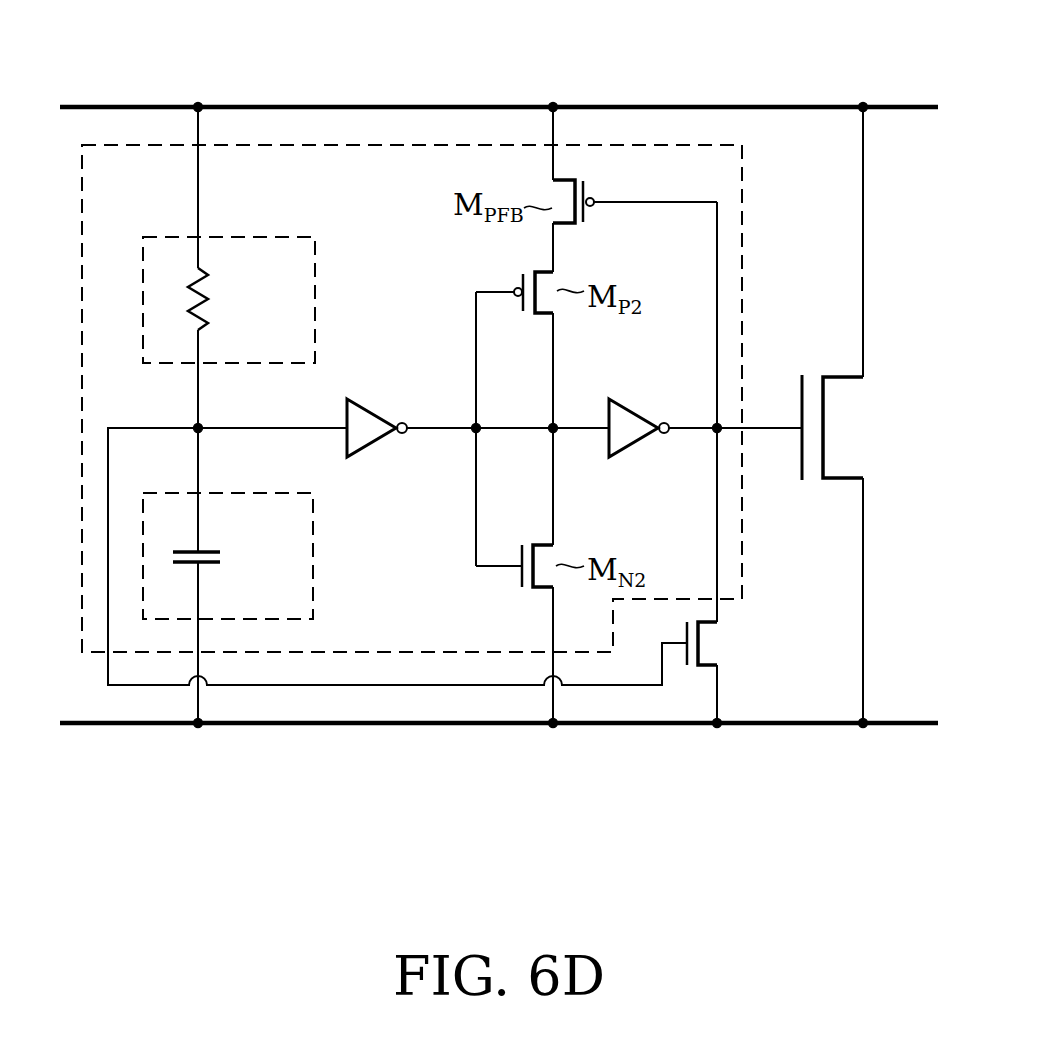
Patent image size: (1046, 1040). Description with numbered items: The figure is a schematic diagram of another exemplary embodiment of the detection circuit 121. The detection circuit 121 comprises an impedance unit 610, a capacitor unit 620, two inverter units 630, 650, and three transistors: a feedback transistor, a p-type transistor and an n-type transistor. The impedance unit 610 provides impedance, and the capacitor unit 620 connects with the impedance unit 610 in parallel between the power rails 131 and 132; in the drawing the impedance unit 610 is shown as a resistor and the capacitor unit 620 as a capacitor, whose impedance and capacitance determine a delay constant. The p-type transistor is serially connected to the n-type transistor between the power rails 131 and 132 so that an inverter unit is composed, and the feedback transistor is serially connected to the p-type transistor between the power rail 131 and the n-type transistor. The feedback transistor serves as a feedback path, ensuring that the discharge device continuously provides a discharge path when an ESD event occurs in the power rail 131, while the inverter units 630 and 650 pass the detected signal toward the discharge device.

The power rail 131 is at (628, 105).
The power rail 132 is at (633, 726).
The detection circuit 121 is at (744, 181).
The impedance unit 610 is at (231, 236).
The capacitor unit 620 is at (231, 491).
The inverter unit 630 is at (374, 412).
The inverter unit 650 is at (637, 412).